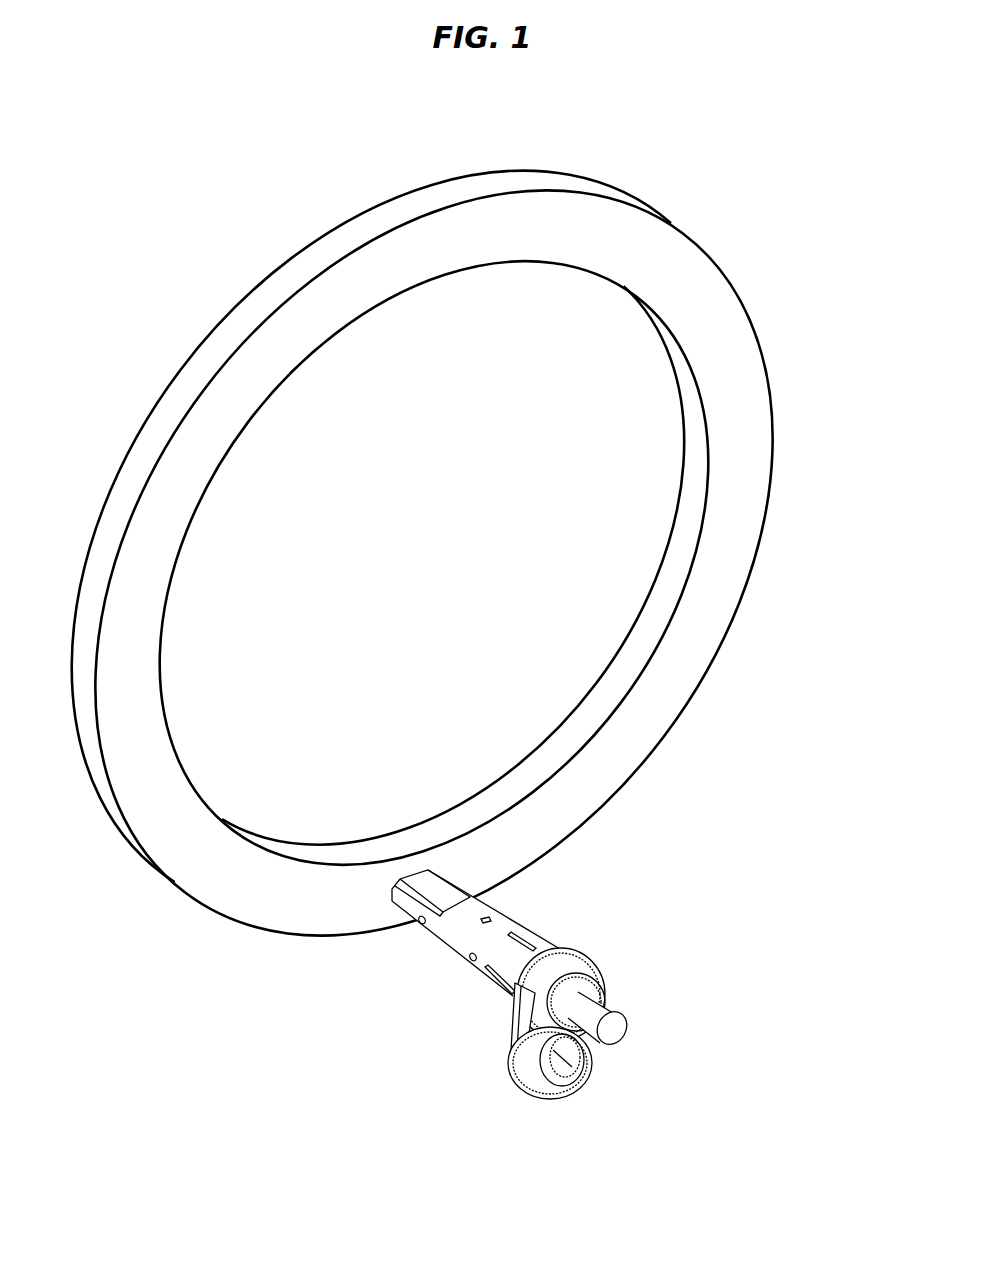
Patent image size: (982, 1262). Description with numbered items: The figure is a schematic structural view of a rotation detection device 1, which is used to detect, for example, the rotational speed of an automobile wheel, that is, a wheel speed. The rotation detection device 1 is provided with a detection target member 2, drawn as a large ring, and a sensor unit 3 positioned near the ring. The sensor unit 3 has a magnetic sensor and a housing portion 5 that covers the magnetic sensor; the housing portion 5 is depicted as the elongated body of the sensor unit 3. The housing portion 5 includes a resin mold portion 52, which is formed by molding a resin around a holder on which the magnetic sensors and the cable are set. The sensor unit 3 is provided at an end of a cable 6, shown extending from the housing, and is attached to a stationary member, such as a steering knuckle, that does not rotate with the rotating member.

The rotation detection device 1 is at (183, 217).
The detection target member 2 is at (762, 267).
The sensor unit 3 is at (592, 898).
The housing portion 5 is at (432, 945).
The resin mold portion 52 is at (458, 957).
The cable 6 is at (602, 1010).